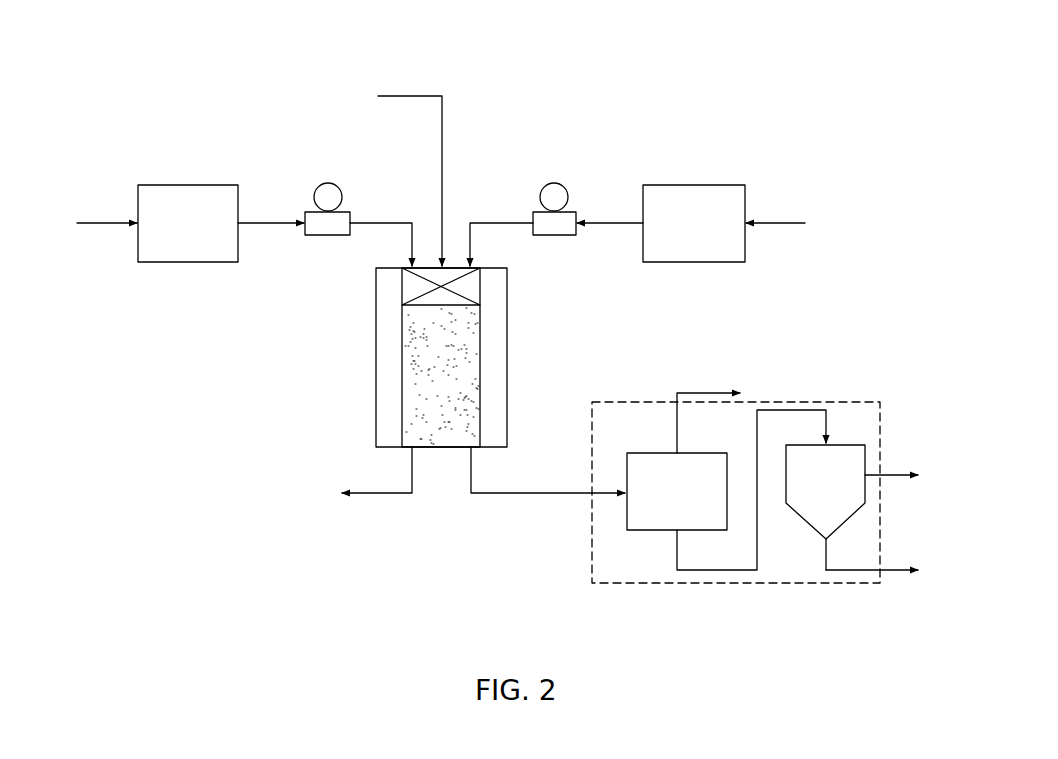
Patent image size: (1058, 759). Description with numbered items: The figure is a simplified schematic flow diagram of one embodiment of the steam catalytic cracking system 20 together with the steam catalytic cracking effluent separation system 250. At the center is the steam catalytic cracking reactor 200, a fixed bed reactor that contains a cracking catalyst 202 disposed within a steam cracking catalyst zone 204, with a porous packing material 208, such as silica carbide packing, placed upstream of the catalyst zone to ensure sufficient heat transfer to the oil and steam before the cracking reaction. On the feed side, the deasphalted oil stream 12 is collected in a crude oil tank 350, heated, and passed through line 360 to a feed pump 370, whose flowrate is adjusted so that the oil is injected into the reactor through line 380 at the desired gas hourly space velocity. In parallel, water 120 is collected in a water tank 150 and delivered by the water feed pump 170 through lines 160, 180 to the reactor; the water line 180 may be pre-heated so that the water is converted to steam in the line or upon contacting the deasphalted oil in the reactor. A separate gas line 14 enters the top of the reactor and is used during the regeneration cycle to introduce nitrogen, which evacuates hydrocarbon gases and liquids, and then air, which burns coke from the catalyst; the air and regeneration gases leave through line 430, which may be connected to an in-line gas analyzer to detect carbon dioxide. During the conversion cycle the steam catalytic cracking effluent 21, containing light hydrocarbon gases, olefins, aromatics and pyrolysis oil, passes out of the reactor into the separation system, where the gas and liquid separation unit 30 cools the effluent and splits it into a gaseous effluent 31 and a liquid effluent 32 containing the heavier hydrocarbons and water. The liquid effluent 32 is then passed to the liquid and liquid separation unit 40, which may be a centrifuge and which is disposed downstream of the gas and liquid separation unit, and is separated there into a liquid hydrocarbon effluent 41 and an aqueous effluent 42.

The deasphalted oil stream 12 is at (99, 218).
The gas line 14 is at (420, 94).
The steam catalytic cracking system 20 is at (766, 104).
The steam catalytic cracking effluent 21 is at (502, 497).
The gas and liquid separation unit 30 is at (695, 510).
The gaseous effluent 31 is at (705, 392).
The liquid effluent 32 is at (718, 573).
The liquid and liquid separation unit 40 is at (843, 496).
The liquid hydrocarbon effluent 41 is at (890, 472).
The aqueous effluent 42 is at (890, 567).
The water 120 is at (782, 220).
The water tank 150 is at (719, 243).
The line 160 is at (621, 230).
The water feed pump 170 is at (560, 182).
The water line 180 is at (510, 220).
The steam catalytic cracking reactor 200 is at (416, 359).
The cracking catalyst 202 is at (410, 344).
The steam cracking catalyst zone 204 is at (470, 340).
The porous packing material 208 is at (410, 286).
The steam catalytic cracking effluent separation system 250 is at (815, 400).
The crude oil tank 350 is at (215, 243).
The line 360 is at (280, 232).
The feed pump 370 is at (322, 182).
The line 380 is at (383, 220).
The line 430 is at (383, 497).